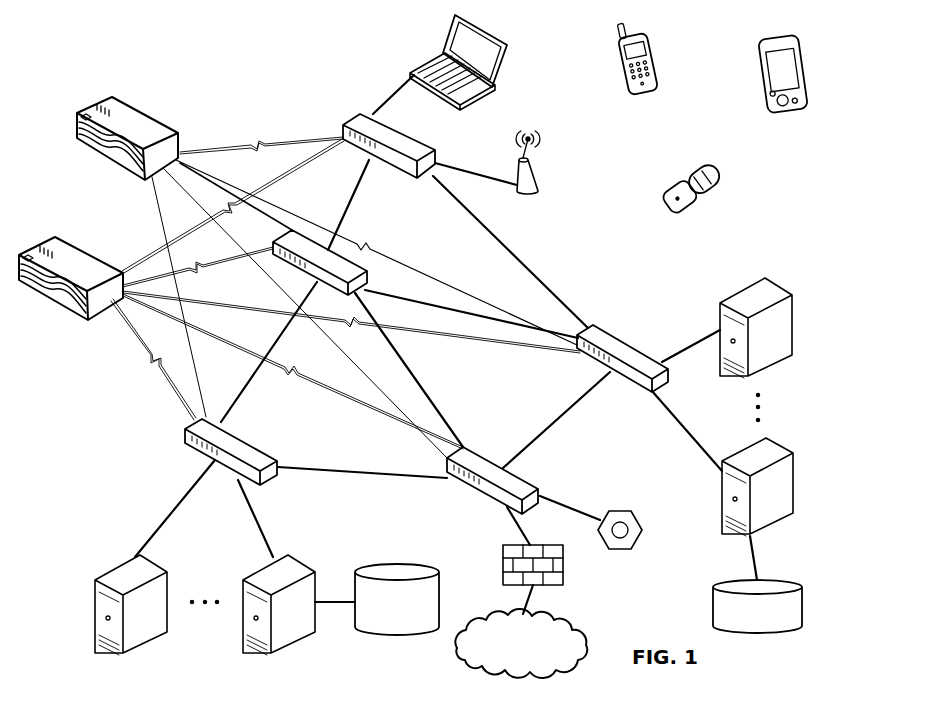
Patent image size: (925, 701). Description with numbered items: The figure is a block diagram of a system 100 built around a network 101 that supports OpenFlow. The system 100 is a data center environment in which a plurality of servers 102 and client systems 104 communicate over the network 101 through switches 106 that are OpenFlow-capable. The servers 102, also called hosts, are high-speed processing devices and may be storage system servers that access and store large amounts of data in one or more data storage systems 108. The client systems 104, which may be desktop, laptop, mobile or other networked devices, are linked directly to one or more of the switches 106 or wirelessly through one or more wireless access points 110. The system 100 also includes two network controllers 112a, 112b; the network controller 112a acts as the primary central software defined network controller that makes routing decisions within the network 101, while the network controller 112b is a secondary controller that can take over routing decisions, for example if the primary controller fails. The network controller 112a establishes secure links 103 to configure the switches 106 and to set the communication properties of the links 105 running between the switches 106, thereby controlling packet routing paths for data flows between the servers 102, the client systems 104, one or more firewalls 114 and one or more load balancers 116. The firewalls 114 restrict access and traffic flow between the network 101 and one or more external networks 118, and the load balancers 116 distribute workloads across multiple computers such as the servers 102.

The system 100 is at (75, 53).
The network 101 is at (330, 64).
The servers 102 is at (155, 565).
The secure links 103 is at (287, 141).
The client systems 104 is at (497, 32).
The links 105 is at (365, 176).
The switches 106 is at (437, 150).
The data storage systems 108 is at (578, 599).
The wireless access points 110 is at (543, 169).
The network controller 112a is at (60, 240).
The network controller 112b is at (121, 99).
The firewalls 114 is at (505, 548).
The load balancers 116 is at (628, 506).
The external networks 118 is at (521, 643).